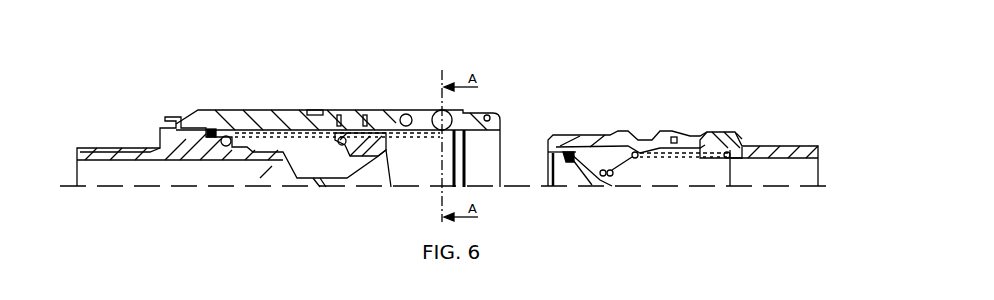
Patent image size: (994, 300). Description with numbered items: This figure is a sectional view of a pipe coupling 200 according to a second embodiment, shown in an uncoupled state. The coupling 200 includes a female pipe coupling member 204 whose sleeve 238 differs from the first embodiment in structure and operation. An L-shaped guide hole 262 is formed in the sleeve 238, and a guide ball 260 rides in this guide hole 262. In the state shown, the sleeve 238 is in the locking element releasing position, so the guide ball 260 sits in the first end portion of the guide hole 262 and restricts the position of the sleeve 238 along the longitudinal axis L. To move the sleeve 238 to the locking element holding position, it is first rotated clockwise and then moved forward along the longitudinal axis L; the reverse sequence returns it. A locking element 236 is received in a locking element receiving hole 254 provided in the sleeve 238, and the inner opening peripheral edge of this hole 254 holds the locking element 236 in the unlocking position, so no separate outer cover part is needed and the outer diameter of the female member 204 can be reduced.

The pipe coupling 200 is at (545, 76).
The female pipe coupling member 204 is at (107, 130).
The locking element 236 is at (438, 111).
The sleeve 238 is at (357, 110).
The locking element receiving hole 254 is at (436, 138).
The guide ball 260 is at (407, 113).
The L-shaped guide hole 262 is at (377, 110).
The longitudinal axis L is at (818, 187).